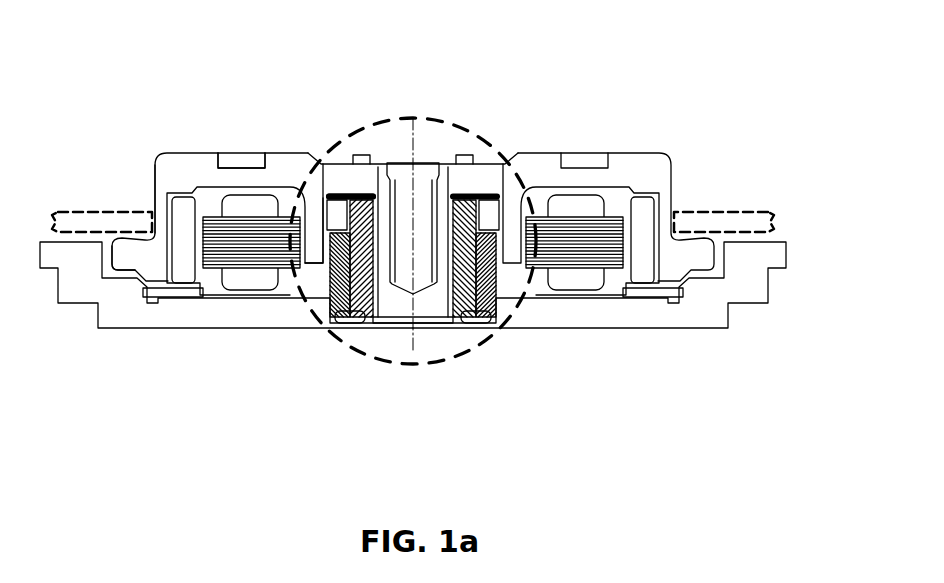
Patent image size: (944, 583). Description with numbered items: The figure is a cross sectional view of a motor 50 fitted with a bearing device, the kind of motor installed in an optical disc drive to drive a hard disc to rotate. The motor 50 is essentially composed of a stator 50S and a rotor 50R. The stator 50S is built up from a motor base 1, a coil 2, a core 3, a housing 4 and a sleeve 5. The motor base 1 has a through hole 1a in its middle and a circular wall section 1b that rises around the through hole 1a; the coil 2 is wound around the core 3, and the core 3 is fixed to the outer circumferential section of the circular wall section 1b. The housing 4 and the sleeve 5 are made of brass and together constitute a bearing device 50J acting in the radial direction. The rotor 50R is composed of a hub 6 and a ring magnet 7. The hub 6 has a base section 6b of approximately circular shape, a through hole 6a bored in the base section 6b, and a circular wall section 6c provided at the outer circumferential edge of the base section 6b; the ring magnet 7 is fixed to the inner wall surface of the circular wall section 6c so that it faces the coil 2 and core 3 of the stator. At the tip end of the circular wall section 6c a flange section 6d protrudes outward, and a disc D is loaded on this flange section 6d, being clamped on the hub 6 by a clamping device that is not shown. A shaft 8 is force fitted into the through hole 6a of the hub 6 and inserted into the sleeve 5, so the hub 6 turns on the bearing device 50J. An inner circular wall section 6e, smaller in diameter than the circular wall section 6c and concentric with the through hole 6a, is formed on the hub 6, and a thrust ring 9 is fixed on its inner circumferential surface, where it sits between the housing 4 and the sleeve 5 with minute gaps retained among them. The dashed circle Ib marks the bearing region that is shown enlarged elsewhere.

The motor 50 is at (728, 36).
The rotor 50R is at (653, 59).
The stator 50S is at (739, 414).
The bearing device 50J is at (565, 380).
The motor base 1 is at (315, 380).
The through hole 1a is at (327, 298).
The circular wall section 1b is at (302, 300).
The coil 2 is at (573, 277).
The core 3 is at (610, 263).
The housing 4 is at (500, 318).
The sleeve 5 is at (472, 325).
The hub 6 is at (337, 97).
The through hole 6a is at (318, 182).
The base section 6b is at (228, 165).
The circular wall section 6c is at (163, 212).
The flange section 6d is at (122, 248).
The inner circular wall section 6e is at (318, 218).
The ring magnet 7 is at (640, 200).
The shaft 8 is at (387, 295).
The thrust ring 9 is at (492, 205).
The detail circle Ib is at (437, 122).
The disc D is at (705, 205).